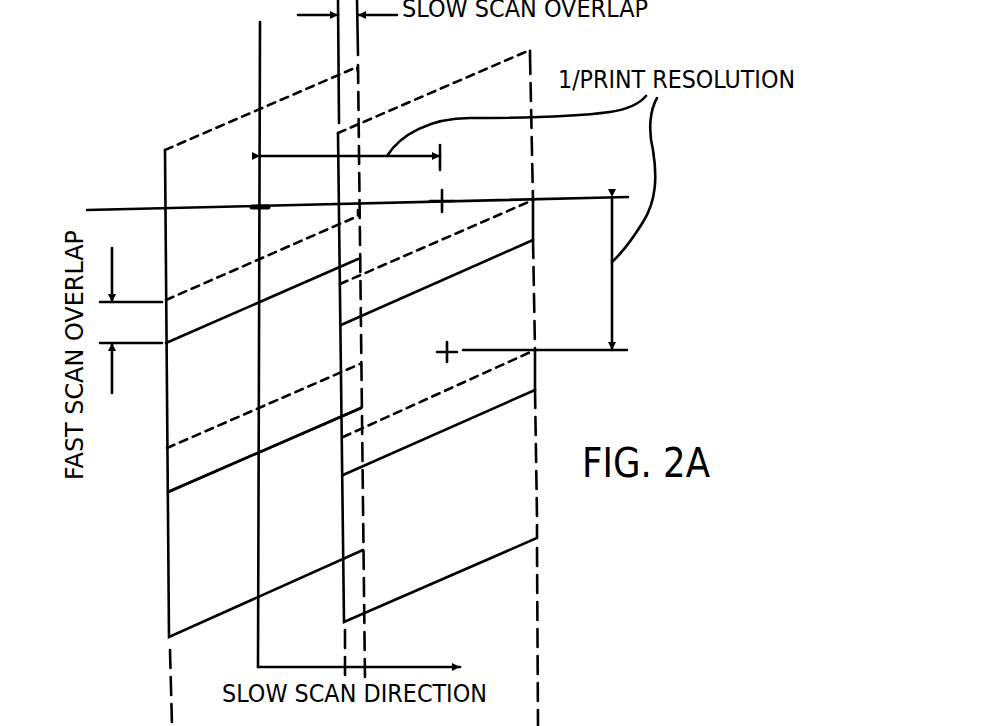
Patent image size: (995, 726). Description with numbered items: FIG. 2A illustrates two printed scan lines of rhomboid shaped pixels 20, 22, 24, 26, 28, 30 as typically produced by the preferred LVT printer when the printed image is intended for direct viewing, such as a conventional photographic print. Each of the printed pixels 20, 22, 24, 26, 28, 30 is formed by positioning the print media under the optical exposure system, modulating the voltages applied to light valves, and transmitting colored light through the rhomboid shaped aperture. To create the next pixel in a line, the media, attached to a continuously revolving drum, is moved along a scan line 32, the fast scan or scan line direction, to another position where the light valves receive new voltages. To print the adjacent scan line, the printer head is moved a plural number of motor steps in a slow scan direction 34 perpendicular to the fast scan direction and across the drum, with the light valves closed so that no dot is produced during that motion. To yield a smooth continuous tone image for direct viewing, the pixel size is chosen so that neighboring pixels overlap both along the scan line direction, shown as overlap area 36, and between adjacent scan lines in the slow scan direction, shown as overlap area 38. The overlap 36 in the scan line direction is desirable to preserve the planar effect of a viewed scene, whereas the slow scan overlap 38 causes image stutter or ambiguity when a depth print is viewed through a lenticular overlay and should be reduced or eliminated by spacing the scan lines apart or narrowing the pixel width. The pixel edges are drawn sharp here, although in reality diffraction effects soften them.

The printed pixel 20 is at (169, 567).
The printed pixel 22 is at (165, 407).
The printed pixel 24 is at (165, 277).
The printed pixel 26 is at (465, 572).
The printed pixel 28 is at (537, 290).
The printed pixel 30 is at (536, 157).
The scan line 32 is at (260, 80).
The slow scan direction 34 is at (104, 208).
The overlap area 36 is at (217, 461).
The overlap area 38 is at (353, 507).